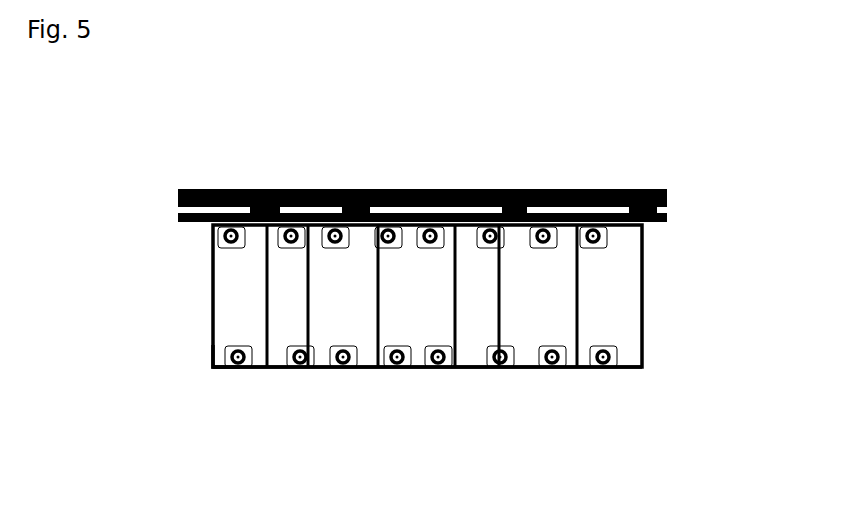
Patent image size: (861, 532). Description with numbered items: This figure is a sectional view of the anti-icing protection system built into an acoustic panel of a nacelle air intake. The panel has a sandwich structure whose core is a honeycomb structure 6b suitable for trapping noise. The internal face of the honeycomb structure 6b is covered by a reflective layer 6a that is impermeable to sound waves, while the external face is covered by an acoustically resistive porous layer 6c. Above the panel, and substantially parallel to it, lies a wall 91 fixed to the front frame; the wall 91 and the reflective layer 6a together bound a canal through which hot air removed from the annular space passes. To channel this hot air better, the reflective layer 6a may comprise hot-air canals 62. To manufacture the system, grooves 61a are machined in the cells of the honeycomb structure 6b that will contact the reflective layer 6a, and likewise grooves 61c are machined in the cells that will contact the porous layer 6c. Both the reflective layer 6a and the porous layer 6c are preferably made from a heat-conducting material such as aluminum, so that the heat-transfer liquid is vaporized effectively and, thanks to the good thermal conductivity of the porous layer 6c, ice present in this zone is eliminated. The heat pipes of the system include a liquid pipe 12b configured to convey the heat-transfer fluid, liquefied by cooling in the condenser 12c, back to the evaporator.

The wall 91 is at (637, 192).
The hot-air canals 62 is at (572, 192).
The reflective layer 6a is at (177, 217).
The honeycomb structure 6b is at (613, 317).
The acoustically resistive porous layer 6c is at (635, 370).
The liquid pipe 12b is at (212, 237).
The condenser 12c is at (212, 368).
The grooves 61a is at (558, 246).
The grooves 61c is at (344, 349).